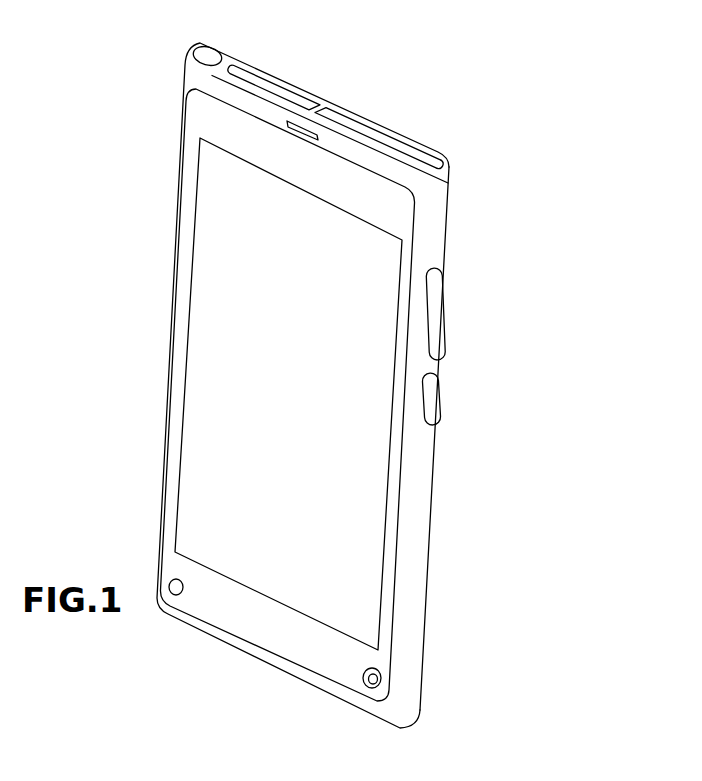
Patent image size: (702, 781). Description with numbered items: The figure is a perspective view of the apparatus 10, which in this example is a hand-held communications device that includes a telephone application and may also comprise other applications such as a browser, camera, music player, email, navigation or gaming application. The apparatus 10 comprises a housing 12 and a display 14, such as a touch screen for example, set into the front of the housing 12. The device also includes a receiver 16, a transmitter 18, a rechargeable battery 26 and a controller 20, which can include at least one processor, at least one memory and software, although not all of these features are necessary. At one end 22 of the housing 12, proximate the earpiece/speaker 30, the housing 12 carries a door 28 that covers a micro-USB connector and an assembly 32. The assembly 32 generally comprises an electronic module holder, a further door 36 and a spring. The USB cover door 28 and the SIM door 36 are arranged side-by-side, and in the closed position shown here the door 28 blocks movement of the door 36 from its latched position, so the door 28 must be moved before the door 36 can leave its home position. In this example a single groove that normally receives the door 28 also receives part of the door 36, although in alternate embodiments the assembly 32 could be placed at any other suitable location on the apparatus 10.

The apparatus 10 is at (503, 79).
The housing 12 is at (429, 566).
The display 14 is at (203, 208).
The receiver 16 is at (440, 222).
The transmitter 18 is at (445, 245).
The controller 20 is at (197, 405).
The end of the housing 22 is at (206, 65).
The rechargeable battery 26 is at (422, 502).
The door 28 is at (253, 78).
The earpiece/speaker 30 is at (299, 122).
The assembly 32 is at (365, 131).
The door 36 is at (413, 152).